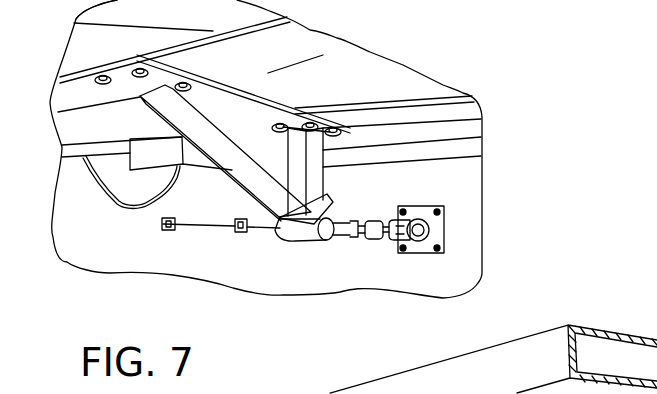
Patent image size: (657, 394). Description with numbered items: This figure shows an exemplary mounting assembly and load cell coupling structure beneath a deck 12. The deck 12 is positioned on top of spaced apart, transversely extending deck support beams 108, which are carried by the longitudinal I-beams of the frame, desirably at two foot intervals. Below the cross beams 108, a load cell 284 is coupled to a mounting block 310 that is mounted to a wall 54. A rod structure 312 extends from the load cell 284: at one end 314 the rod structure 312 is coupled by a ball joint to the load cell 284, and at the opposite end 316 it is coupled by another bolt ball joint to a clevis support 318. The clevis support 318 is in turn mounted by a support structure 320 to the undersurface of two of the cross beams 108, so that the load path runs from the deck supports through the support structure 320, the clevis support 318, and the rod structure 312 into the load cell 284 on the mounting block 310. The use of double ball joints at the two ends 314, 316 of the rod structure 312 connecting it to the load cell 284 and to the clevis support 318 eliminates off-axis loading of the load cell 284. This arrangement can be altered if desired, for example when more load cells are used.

The deck 12 is at (117, 0).
The deck support beam 108 is at (298, 43).
The wall 54 is at (455, 188).
The mounting block 310 is at (445, 229).
The load cell 284 is at (413, 242).
The support structure 320 is at (237, 172).
The clevis support 318 is at (279, 233).
The opposite end of rod structure 316 is at (330, 241).
The rod structure 312 is at (362, 240).
The end of rod structure 314 is at (403, 242).